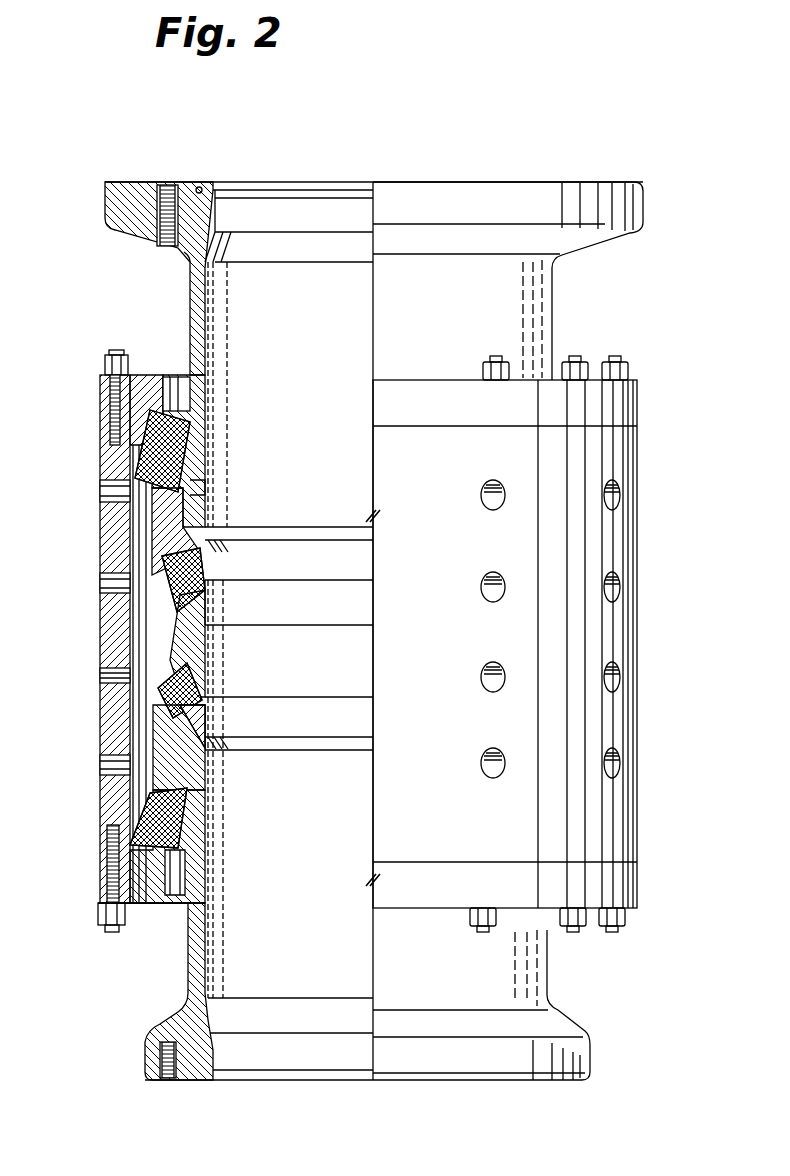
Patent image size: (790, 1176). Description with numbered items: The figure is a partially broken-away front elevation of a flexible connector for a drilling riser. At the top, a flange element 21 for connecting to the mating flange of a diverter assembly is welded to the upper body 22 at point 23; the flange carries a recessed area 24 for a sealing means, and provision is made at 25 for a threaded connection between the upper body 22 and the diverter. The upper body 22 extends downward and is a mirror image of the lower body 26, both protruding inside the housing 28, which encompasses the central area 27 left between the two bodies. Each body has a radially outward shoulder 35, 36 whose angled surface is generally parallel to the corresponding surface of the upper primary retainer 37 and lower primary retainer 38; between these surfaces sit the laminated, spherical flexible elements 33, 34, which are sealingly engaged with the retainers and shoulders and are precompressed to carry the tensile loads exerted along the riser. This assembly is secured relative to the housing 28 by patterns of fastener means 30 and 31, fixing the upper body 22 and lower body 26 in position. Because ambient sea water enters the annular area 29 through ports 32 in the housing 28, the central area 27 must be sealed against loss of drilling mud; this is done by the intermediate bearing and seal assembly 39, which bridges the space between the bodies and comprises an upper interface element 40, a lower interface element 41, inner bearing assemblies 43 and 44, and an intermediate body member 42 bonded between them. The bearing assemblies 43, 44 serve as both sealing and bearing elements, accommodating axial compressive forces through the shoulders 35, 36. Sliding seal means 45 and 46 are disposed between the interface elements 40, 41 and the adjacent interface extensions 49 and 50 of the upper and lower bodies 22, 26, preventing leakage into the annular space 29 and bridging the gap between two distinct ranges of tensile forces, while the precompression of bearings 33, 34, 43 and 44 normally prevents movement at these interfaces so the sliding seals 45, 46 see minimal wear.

The flange element 21 is at (644, 221).
The upper body 22 is at (190, 304).
The weld point 23 is at (190, 255).
The recessed area 24 is at (135, 180).
The threaded connection 25 is at (168, 182).
The lower body 26 is at (196, 950).
The central area 27 is at (331, 668).
The housing 28 is at (552, 732).
The annular area 29 is at (153, 626).
The fastener means 30 is at (103, 364).
The fastener means 31 is at (97, 913).
The ports 32 is at (103, 673).
The flexible element 33 is at (177, 428).
The flexible element 34 is at (187, 835).
The shoulder 35 is at (197, 453).
The shoulder 36 is at (180, 818).
The upper primary retainer 37 is at (140, 397).
The lower primary retainer 38 is at (140, 905).
The intermediate bearing and seal assembly 39 is at (206, 623).
The upper interface element 40 is at (178, 518).
The lower interface element 41 is at (190, 732).
The intermediate body member 42 is at (190, 640).
The bearing assembly 43 is at (190, 567).
The bearing assembly 44 is at (190, 697).
The sliding seal means 45 is at (185, 501).
The sliding seal means 46 is at (182, 751).
The interface extension 49 is at (197, 487).
The interface extension 50 is at (190, 773).